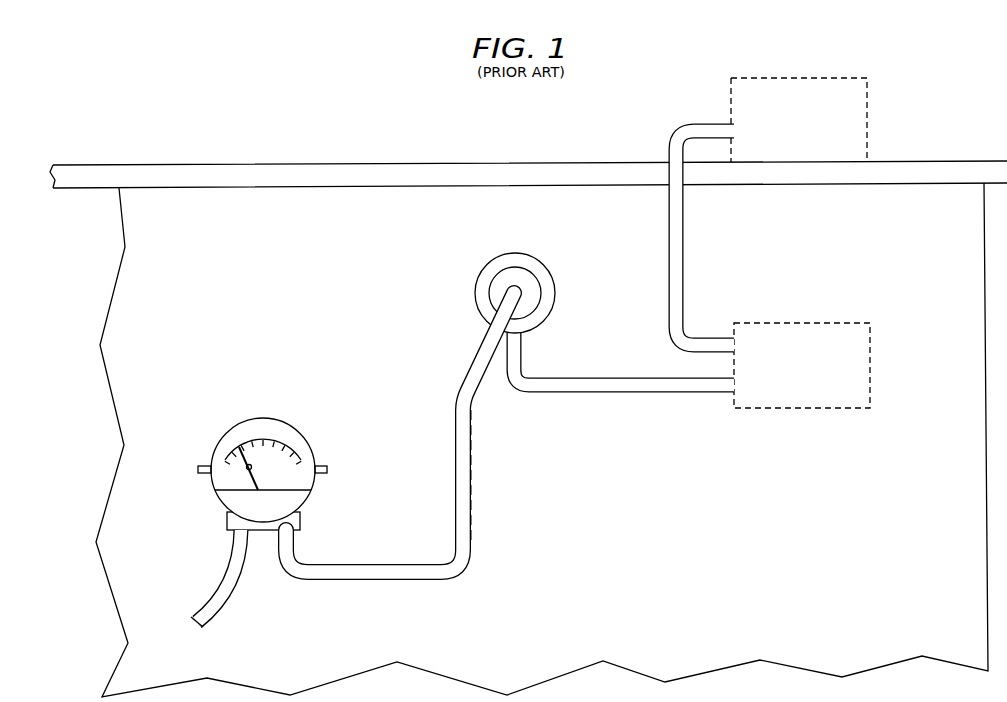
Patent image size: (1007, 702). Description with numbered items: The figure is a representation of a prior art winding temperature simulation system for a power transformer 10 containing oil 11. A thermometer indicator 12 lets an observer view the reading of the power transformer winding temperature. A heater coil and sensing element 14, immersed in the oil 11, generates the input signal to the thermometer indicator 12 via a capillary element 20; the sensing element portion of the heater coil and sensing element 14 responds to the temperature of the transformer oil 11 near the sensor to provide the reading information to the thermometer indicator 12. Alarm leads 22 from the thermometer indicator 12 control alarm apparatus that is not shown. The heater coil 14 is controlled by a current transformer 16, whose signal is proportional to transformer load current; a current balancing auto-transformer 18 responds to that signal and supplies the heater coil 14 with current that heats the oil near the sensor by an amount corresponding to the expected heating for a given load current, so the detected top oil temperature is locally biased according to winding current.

The power transformer 10 is at (293, 165).
The oil 11 is at (588, 205).
The thermometer indicator 12 is at (240, 423).
The heater coil and sensing element 14 is at (480, 296).
The current transformer 16 is at (829, 77).
The current balancing auto-transformer 18 is at (832, 322).
The capillary element 20 is at (471, 505).
The alarm leads 22 is at (220, 582).